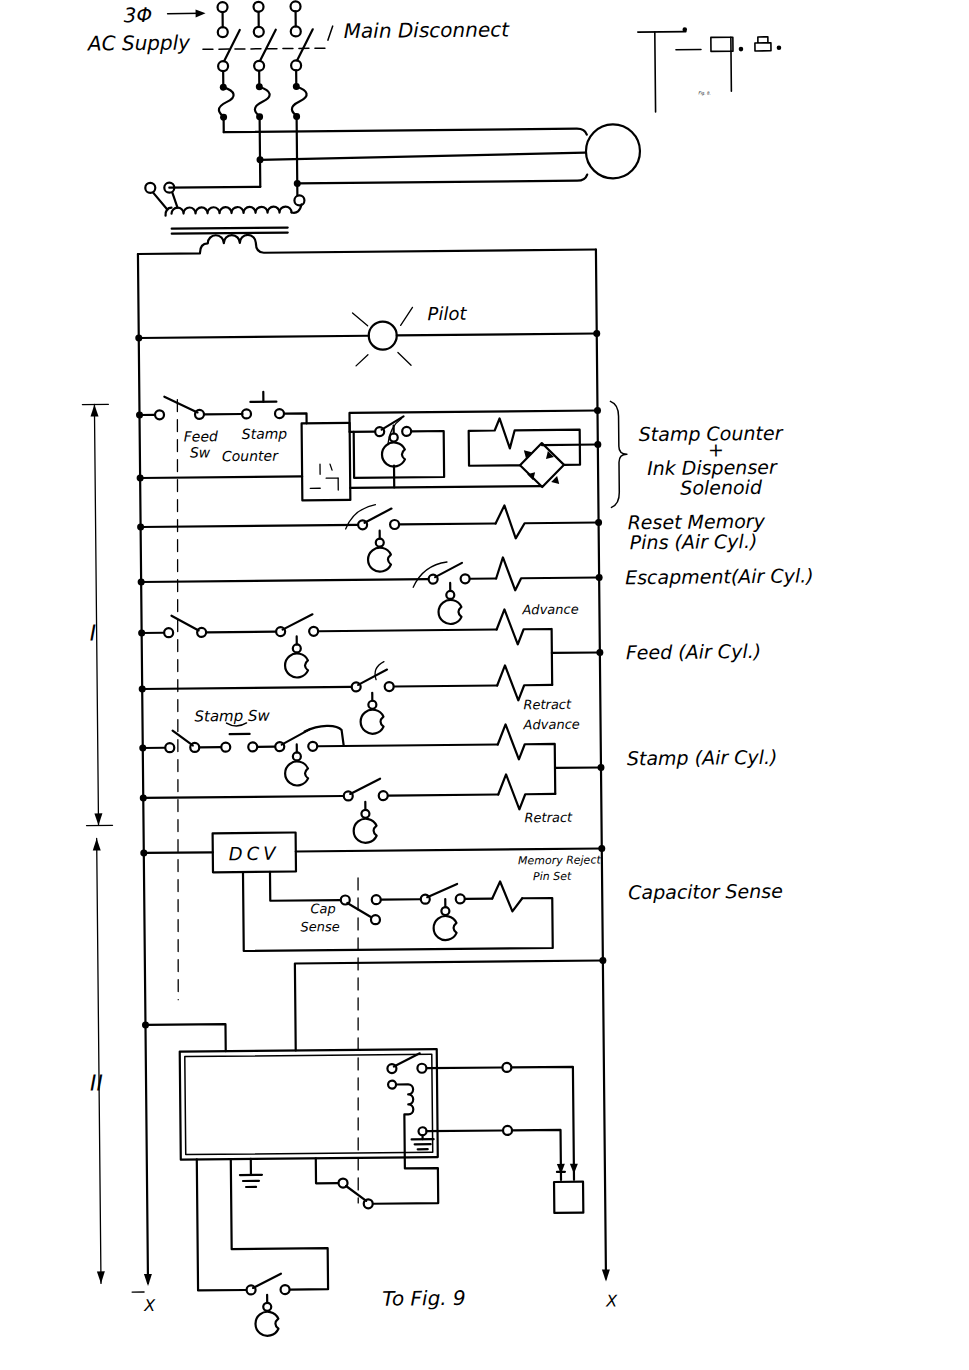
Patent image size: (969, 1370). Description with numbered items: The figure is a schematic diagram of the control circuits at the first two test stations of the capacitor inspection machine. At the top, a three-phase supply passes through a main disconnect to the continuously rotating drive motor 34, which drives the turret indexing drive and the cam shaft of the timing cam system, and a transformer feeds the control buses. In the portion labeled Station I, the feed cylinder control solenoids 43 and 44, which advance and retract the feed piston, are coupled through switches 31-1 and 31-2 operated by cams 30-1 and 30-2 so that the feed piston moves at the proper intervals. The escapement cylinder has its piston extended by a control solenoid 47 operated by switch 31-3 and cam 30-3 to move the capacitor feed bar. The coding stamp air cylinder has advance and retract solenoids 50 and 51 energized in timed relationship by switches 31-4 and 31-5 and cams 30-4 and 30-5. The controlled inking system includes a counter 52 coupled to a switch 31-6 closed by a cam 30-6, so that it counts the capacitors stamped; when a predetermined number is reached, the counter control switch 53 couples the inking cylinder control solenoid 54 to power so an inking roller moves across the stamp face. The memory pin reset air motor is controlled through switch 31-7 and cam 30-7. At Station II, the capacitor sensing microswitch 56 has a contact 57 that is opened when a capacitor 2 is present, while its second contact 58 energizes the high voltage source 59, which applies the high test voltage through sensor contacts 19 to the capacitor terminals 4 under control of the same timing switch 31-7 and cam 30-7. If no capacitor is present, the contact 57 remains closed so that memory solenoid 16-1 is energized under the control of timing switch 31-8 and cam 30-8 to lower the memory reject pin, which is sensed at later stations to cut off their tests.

The drive motor 34 is at (644, 157).
The counter 52 is at (321, 432).
The switch 31-6 is at (390, 421).
The cam 30-6 is at (398, 488).
The control solenoid 54 is at (497, 421).
The control switch / control solenoid 53 is at (506, 514).
The switch 31-7 is at (352, 531).
The cam 30-7 is at (364, 563).
The control solenoid 47 is at (506, 572).
The switch 31-3 is at (410, 590).
The cam 30-3 is at (434, 616).
The switch 31-1 is at (281, 623).
The cam 30-1 is at (281, 668).
The feed cylinder control solenoid 43 is at (506, 644).
The feed cylinder control solenoid 44 is at (502, 679).
The switch 31-2 is at (371, 680).
The cam 30-2 is at (382, 716).
The switch 31-4 is at (310, 756).
The cam 30-4 is at (281, 774).
The advance solenoid 50 is at (503, 735).
The retract solenoid 51 is at (502, 782).
The switch 31-5 is at (379, 786).
The cam 30-5 is at (378, 830).
The contact 57 is at (362, 886).
The timing switch 31-8 is at (427, 896).
The cam 30-8 is at (437, 934).
The memory solenoid 16-1 is at (506, 916).
The capacitor sensing microswitch 56 is at (353, 995).
The high voltage source 59 is at (224, 1150).
The second contact 58 is at (337, 1204).
The sensor contacts 19 is at (572, 1157).
The insulated terminals 4 is at (545, 1172).
The capacitor 2 is at (545, 1206).